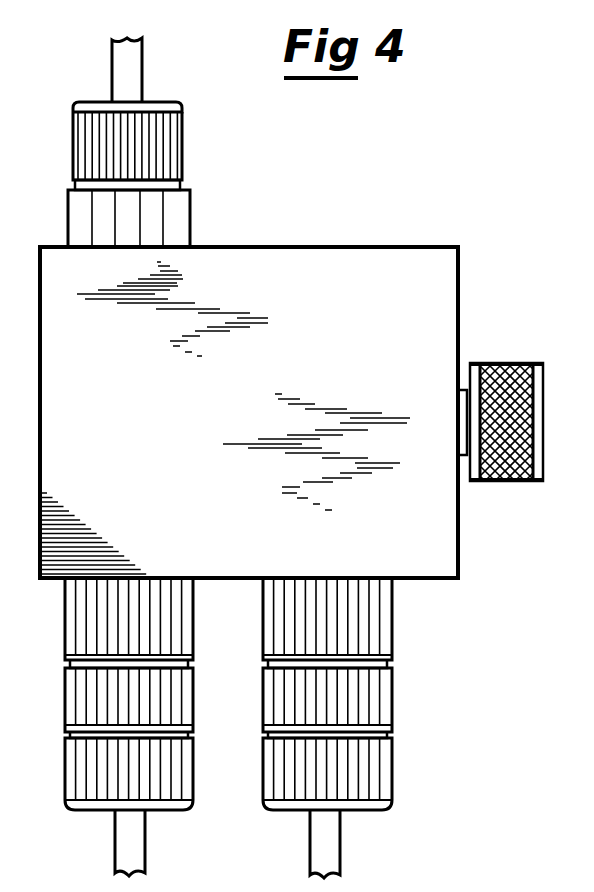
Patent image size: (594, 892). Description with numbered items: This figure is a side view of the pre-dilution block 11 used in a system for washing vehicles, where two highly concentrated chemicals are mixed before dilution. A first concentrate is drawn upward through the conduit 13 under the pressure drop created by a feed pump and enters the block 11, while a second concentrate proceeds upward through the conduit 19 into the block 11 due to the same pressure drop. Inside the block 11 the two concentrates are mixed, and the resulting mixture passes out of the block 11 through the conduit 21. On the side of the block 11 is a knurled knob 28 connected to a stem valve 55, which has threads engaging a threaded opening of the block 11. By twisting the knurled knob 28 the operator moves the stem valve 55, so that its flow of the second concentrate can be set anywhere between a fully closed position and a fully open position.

The pre-dilution block 11 is at (327, 176).
The conduit 21 is at (112, 62).
The conduit 13 is at (113, 858).
The conduit 19 is at (341, 863).
The knurled knob 28 is at (519, 364).
The stem valve 55 is at (464, 456).